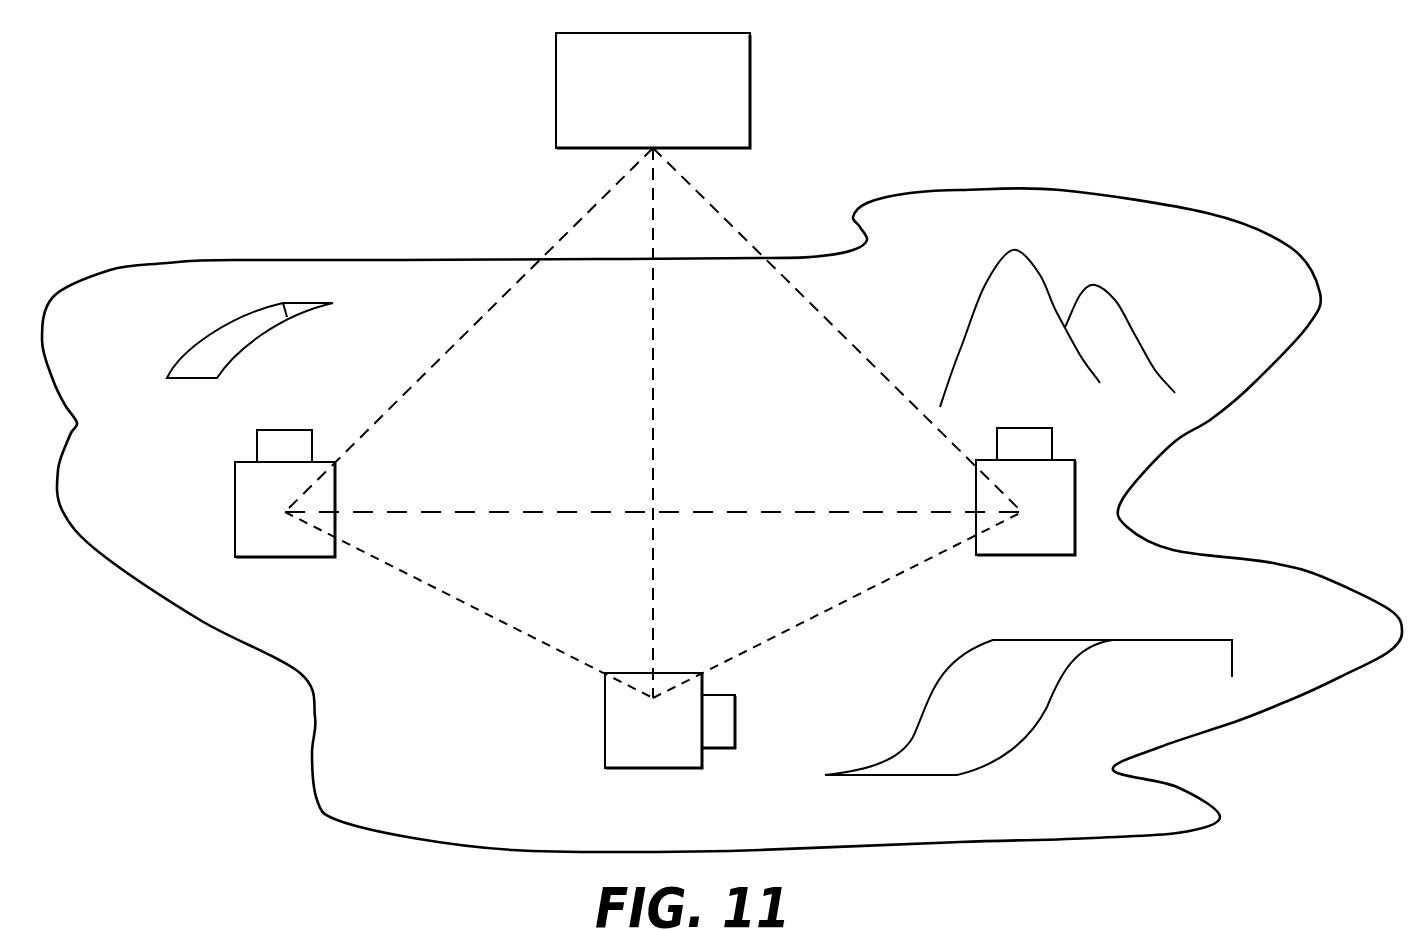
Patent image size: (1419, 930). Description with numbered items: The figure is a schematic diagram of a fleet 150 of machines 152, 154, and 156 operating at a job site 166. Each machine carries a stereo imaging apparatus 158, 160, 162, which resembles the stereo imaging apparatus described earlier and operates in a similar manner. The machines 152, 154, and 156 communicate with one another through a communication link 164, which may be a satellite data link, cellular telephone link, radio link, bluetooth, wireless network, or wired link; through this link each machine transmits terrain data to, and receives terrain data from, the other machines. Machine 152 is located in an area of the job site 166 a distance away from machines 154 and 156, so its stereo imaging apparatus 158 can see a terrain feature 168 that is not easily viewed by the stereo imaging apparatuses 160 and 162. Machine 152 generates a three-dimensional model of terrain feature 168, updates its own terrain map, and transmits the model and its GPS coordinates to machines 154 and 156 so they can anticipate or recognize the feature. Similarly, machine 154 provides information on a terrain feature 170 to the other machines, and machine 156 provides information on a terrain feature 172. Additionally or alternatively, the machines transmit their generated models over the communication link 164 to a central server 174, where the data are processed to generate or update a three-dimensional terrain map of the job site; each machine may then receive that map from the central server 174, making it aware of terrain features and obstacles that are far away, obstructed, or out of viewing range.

The fleet 150 is at (364, 589).
The machine 152 is at (267, 512).
The machine 154 is at (613, 720).
The machine 156 is at (1028, 535).
The stereo imaging apparatus 158 is at (270, 443).
The stereo imaging apparatus 160 is at (722, 733).
The stereo imaging apparatus 162 is at (1037, 443).
The communication link 164 is at (478, 607).
The job site 166 is at (1240, 257).
The terrain feature 168 is at (235, 310).
The terrain feature 170 is at (1066, 724).
The terrain feature 172 is at (1050, 267).
The central server 174 is at (752, 82).